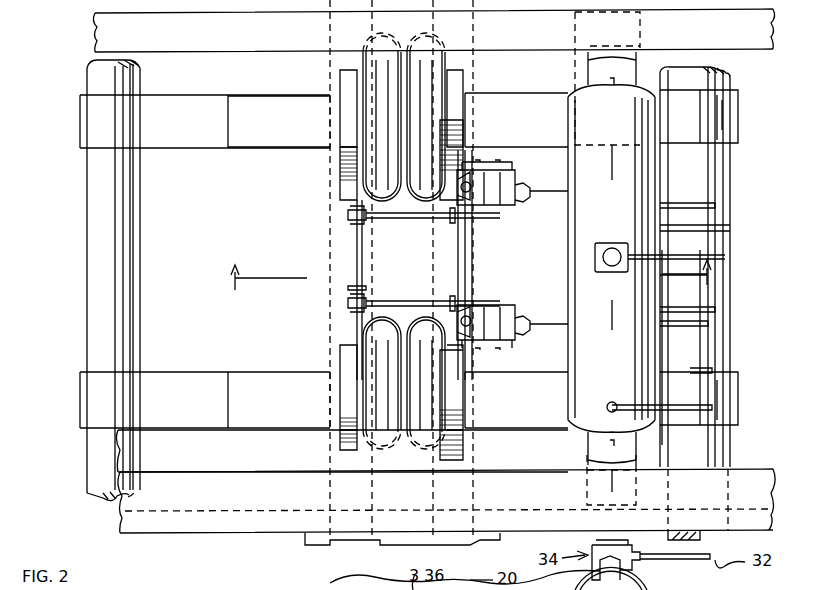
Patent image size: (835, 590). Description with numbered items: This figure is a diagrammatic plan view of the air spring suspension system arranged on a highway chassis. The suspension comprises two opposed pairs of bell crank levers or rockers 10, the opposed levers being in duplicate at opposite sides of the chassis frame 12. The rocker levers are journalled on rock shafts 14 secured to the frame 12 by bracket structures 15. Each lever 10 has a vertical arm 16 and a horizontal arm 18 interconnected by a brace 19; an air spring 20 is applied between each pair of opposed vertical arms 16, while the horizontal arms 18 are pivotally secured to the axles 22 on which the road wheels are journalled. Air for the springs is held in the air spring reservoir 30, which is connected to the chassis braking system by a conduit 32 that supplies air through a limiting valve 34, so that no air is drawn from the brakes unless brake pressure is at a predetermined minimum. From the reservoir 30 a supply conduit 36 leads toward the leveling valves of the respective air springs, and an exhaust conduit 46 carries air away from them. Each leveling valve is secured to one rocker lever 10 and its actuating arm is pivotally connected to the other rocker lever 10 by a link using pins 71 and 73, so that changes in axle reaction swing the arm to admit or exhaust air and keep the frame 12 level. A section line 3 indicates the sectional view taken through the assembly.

The bell crank lever 10 is at (253, 92).
The chassis frame 12 is at (216, 523).
The rock shaft 14 is at (357, 241).
The bracket structure 15 is at (330, 556).
The vertical arm 16 is at (346, 133).
The horizontal arm 18 is at (205, 135).
The brace 19 is at (282, 135).
The air spring 20 is at (406, 208).
The axle 22 is at (125, 234).
The section line 3 is at (470, 287).
The air spring reservoir 30 is at (624, 363).
The conduit 32 is at (713, 249).
The limiting valve 34 is at (608, 236).
The supply conduit 36 is at (688, 192).
The exhaust conduit 46 is at (699, 220).
The pin 71 is at (485, 289).
The pin 73 is at (352, 300).